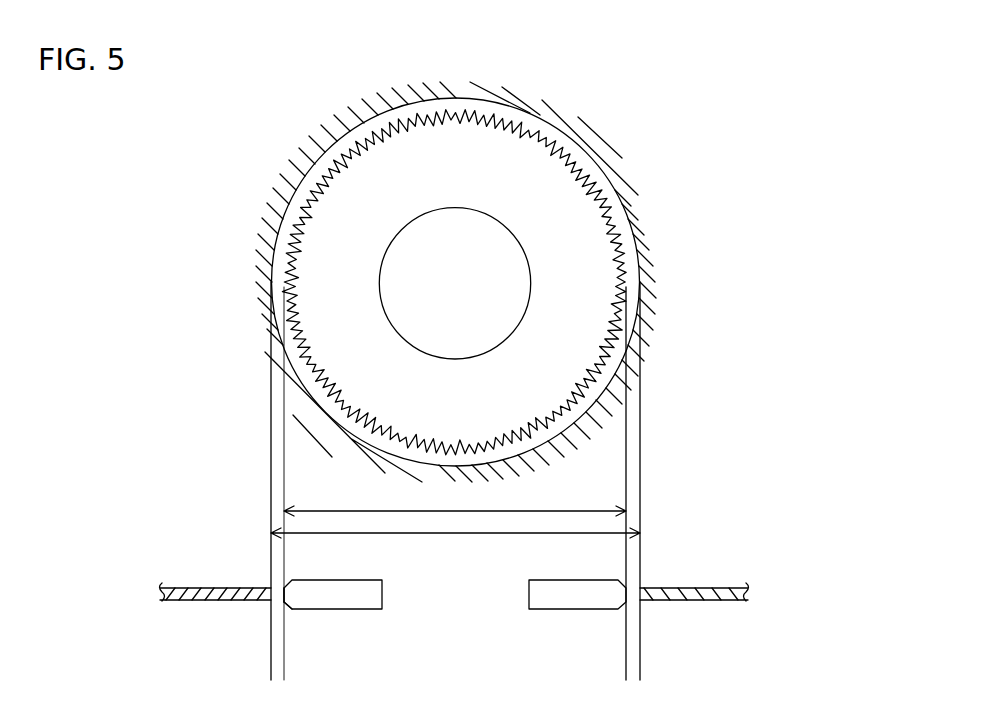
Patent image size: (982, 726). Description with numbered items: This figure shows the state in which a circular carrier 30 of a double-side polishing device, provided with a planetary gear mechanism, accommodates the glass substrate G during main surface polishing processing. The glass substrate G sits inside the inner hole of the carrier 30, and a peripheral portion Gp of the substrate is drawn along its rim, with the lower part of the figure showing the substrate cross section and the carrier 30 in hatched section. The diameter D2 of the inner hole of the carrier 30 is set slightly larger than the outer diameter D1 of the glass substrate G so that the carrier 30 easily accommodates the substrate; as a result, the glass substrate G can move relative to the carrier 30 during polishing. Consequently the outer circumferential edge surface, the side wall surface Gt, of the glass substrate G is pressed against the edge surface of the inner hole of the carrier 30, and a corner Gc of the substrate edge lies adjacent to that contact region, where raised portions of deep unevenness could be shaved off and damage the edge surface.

The glass substrate G is at (565, 212).
The abrasive grain layer of grindstone Gp is at (600, 240).
The side wall surface Gt is at (272, 597).
The corner of grindstone Gc is at (293, 616).
The carrier 30 is at (205, 588).
The outer diameter of the glass substrate D1 is at (455, 501).
The diameter of the inner hole of the carrier D2 is at (455, 544).